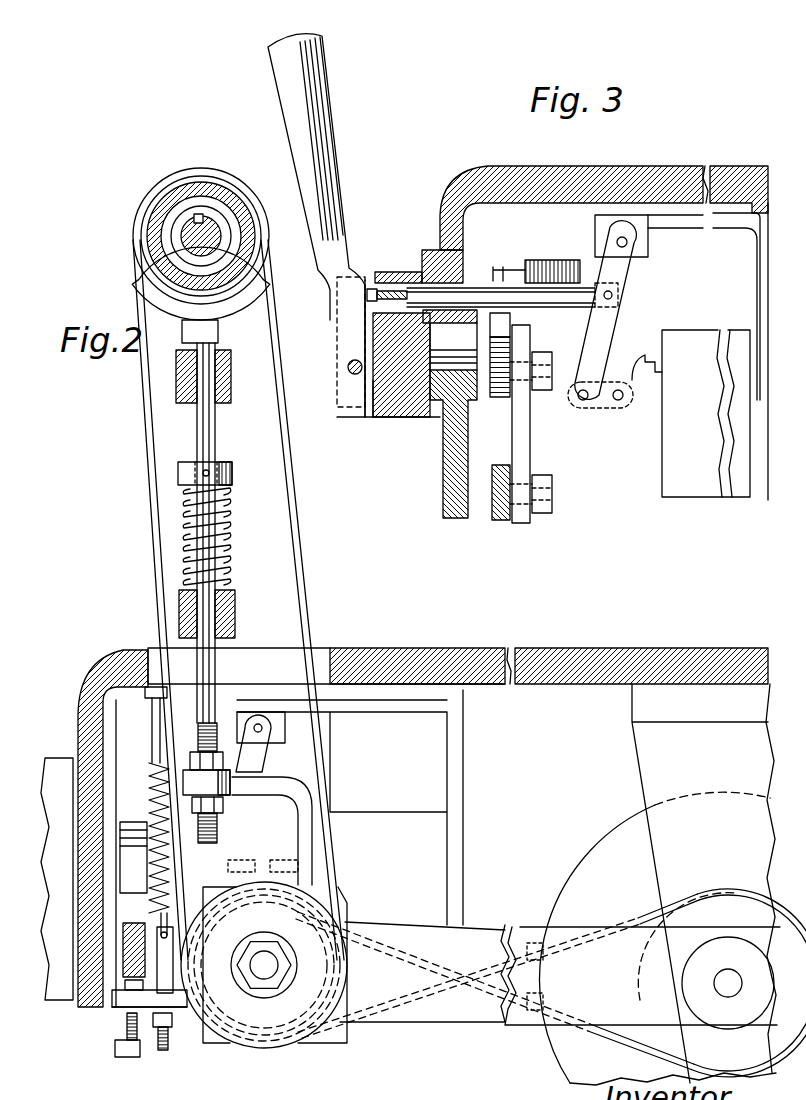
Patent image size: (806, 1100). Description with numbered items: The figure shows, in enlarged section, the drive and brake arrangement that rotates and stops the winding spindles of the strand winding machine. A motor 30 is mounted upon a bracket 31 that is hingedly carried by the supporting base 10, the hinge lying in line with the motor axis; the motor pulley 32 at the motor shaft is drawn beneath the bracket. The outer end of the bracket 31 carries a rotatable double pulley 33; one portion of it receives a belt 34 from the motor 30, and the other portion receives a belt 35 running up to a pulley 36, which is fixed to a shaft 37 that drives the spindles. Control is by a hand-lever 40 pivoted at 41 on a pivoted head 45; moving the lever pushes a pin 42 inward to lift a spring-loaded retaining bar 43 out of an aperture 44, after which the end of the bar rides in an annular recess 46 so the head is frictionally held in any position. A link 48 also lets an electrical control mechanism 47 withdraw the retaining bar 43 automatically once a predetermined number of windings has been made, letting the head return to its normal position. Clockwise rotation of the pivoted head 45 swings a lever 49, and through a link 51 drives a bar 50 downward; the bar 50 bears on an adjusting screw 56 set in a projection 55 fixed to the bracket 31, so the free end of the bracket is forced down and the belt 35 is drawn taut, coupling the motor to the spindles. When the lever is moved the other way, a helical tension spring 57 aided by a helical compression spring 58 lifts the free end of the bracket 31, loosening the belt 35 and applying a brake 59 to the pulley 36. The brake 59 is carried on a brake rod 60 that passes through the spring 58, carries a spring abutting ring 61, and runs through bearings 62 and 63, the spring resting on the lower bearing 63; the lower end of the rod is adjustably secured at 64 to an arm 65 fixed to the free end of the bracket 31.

In FIG. 3, the supporting base 10 is at (634, 172).
In FIG. 2, the supporting base 10 is at (608, 662).
In FIG. 2, the motor 30 is at (606, 848).
In FIG. 2, the bracket 31 is at (537, 930).
In FIG. 2, the drive pulley 32 is at (716, 981).
In FIG. 2, the double pulley 33 is at (247, 1015).
In FIG. 2, the belt 34 is at (355, 1035).
In FIG. 2, the belt 35 is at (312, 640).
In FIG. 2, the pulley 36 is at (148, 232).
In FIG. 2, the shaft 37 is at (205, 226).
In FIG. 3, the hand-lever 40 is at (318, 138).
In FIG. 3, the pivot 41 is at (360, 418).
In FIG. 3, the pin 42 is at (385, 282).
In FIG. 3, the retaining bar 43 is at (488, 292).
In FIG. 2, the retaining bar 43 is at (122, 774).
In FIG. 3, the aperture 44 is at (413, 283).
In FIG. 3, the pivoted head 45 is at (410, 415).
In FIG. 2, the pivoted head 45 is at (53, 766).
In FIG. 3, the annular recess 46 is at (430, 405).
In FIG. 3, the electrical control mechanism 47 is at (693, 342).
In FIG. 2, the electrical control mechanism 47 is at (398, 826).
In FIG. 3, the link 48 is at (600, 332).
In FIG. 3, the lever 49 is at (502, 403).
In FIG. 2, the lever 49 is at (130, 882).
In FIG. 3, the bar 50 is at (503, 513).
In FIG. 2, the bar 50 is at (130, 960).
In FIG. 3, the link 51 is at (520, 438).
In FIG. 2, the link 51 is at (130, 905).
In FIG. 2, the projection 55 is at (160, 1045).
In FIG. 2, the adjusting screw 56 is at (125, 1030).
In FIG. 2, the helical tension spring 57 is at (193, 870).
In FIG. 2, the helical compression spring 58 is at (182, 530).
In FIG. 2, the brake 59 is at (170, 312).
In FIG. 2, the brake rod 60 is at (198, 435).
In FIG. 2, the spring abutting ring 61 is at (180, 472).
In FIG. 2, the bearing 62 is at (178, 390).
In FIG. 2, the bearing 63 is at (222, 612).
In FIG. 2, the adjustable securing point 64 is at (222, 762).
In FIG. 2, the arm 65 is at (288, 807).